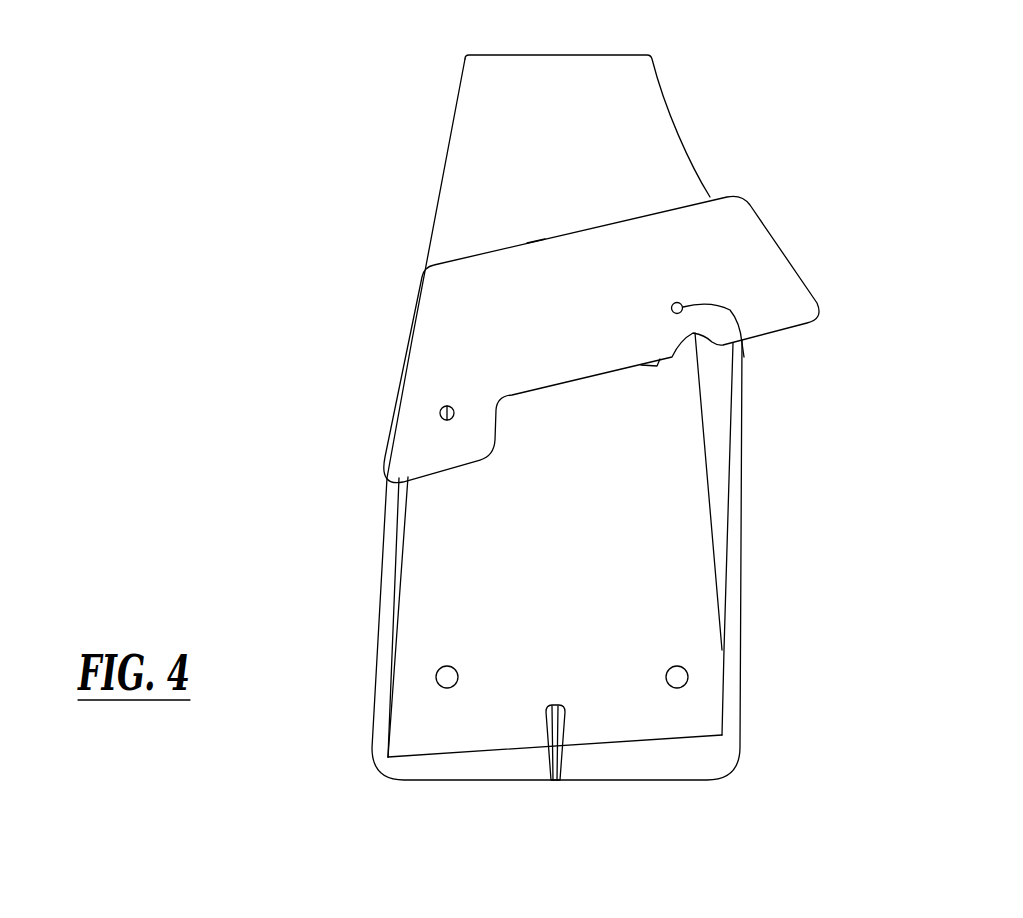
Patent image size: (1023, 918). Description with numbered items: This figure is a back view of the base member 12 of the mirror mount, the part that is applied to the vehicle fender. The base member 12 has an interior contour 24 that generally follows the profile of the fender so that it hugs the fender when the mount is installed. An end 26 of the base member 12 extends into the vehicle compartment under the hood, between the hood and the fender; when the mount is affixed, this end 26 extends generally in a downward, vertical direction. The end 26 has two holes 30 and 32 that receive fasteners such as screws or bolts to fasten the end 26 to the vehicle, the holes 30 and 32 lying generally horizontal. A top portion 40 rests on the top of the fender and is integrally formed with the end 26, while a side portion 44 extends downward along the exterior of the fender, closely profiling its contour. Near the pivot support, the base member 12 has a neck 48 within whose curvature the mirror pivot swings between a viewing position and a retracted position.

The base member 12 is at (643, 416).
The interior contour 24 is at (388, 592).
The end 26 is at (557, 307).
The hole 30 is at (744, 357).
The hole 32 is at (440, 413).
The top portion 40 is at (527, 243).
The side portion 44 is at (650, 592).
The neck 48 is at (588, 105).